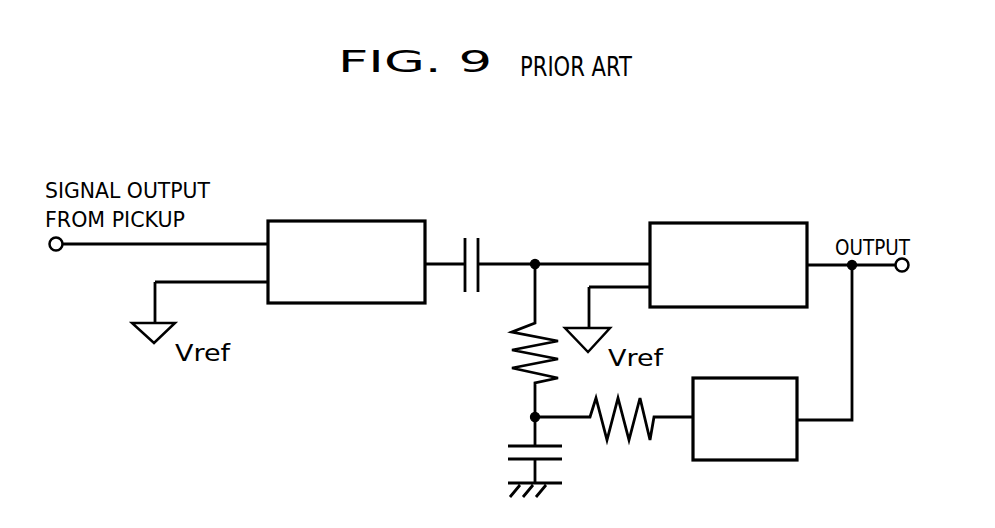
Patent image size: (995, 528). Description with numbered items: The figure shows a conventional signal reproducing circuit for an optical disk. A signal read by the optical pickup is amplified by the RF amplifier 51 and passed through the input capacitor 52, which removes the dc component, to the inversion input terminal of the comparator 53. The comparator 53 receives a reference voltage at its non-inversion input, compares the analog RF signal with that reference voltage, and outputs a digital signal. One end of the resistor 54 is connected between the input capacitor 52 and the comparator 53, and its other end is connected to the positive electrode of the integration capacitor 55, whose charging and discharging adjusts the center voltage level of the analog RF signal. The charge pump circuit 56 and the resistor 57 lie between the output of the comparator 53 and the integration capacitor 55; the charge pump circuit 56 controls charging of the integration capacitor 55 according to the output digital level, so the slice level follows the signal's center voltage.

The RF amplifier 51 is at (377, 219).
The input capacitor 52 is at (482, 252).
The comparator 53 is at (757, 222).
The resistor 54 is at (515, 362).
The integration capacitor 55 is at (518, 443).
The charge pump circuit 56 is at (778, 378).
The resistor 57 is at (630, 428).